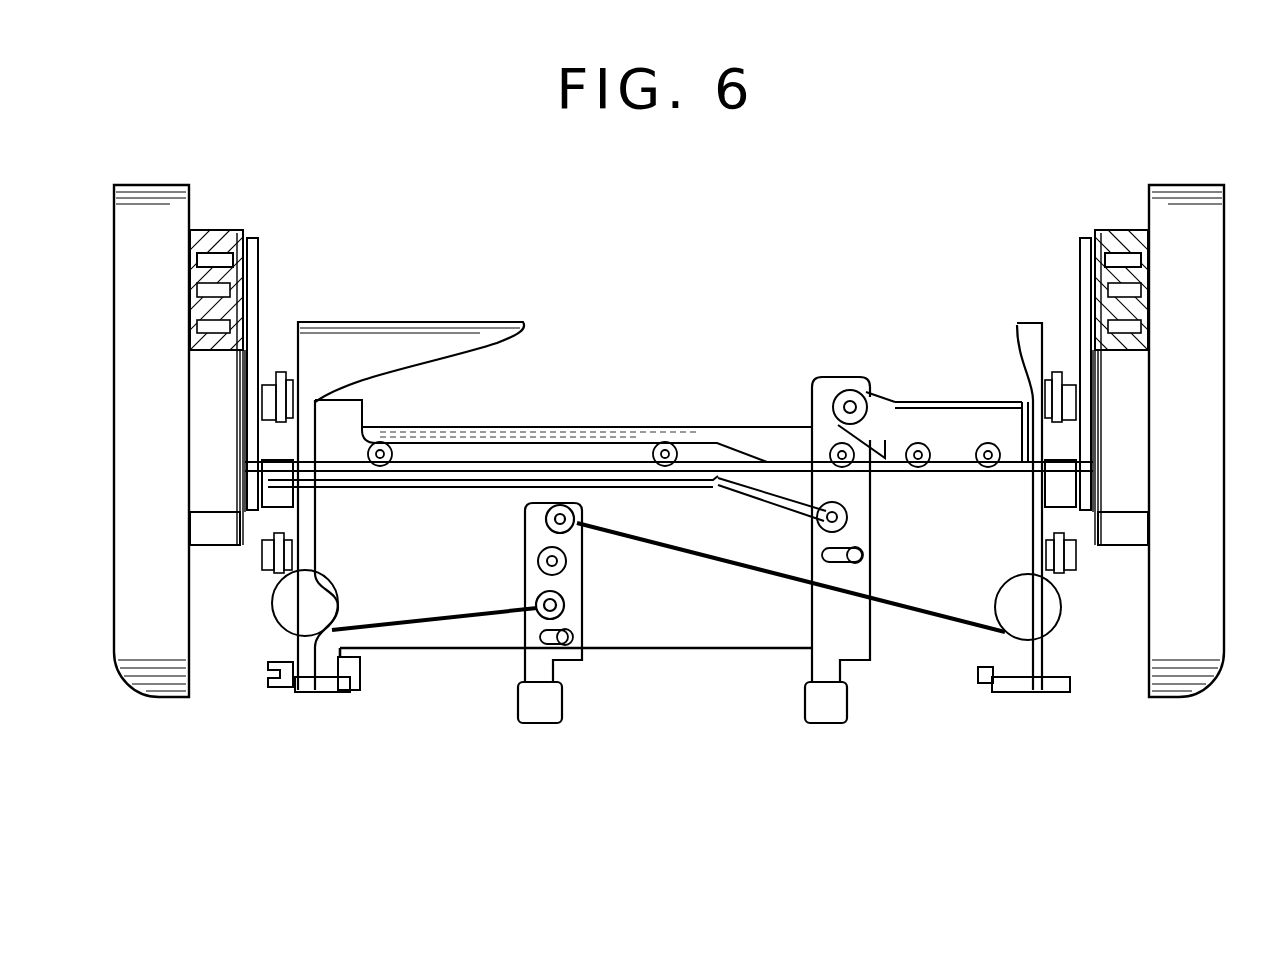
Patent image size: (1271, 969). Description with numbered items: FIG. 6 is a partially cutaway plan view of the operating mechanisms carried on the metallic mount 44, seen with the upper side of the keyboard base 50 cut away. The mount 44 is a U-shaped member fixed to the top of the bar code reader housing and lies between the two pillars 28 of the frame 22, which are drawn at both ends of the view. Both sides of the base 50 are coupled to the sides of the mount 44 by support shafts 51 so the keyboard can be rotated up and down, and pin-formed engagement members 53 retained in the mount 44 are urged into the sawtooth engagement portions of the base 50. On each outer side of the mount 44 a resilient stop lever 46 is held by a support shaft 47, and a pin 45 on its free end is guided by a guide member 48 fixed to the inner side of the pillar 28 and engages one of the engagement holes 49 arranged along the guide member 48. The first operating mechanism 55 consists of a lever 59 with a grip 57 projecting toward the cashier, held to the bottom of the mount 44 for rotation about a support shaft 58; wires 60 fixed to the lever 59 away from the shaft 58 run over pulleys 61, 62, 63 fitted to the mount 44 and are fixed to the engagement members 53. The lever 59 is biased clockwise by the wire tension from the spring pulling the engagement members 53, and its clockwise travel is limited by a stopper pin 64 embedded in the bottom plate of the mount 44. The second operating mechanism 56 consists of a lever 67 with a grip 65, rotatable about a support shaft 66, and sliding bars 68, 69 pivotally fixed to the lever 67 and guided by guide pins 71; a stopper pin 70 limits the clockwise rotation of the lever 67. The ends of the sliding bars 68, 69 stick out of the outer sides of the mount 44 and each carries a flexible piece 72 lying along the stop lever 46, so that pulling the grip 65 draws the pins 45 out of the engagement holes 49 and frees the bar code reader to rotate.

The frame 22 is at (162, 673).
The pillar 28 is at (197, 652).
The mount 44 is at (677, 655).
The pin 45 is at (224, 256).
The stop lever 46 is at (258, 243).
The support shaft 47 is at (265, 490).
The guide member 48 is at (222, 230).
The engagement hole 49 is at (222, 330).
The base 50 is at (430, 332).
The support shaft 51 is at (330, 694).
The engagement member 53 is at (742, 466).
The operating mechanism 55 is at (533, 663).
The operating mechanism 56 is at (853, 607).
The grip 57 is at (540, 724).
The support shaft 58 is at (540, 563).
The lever 59 is at (580, 595).
The wire 60 is at (417, 632).
The pulley 61 is at (283, 608).
The pulley 62 is at (275, 565).
The pulley 63 is at (275, 412).
The stopper pin 64 is at (572, 646).
The grip 65 is at (830, 703).
The support shaft 66 is at (815, 440).
The lever 67 is at (848, 517).
The sliding bar 68 is at (903, 432).
The sliding bar 69 is at (535, 442).
The stopper pin 70 is at (863, 557).
The guide pin 71 is at (385, 448).
The flexible piece 72 is at (297, 340).